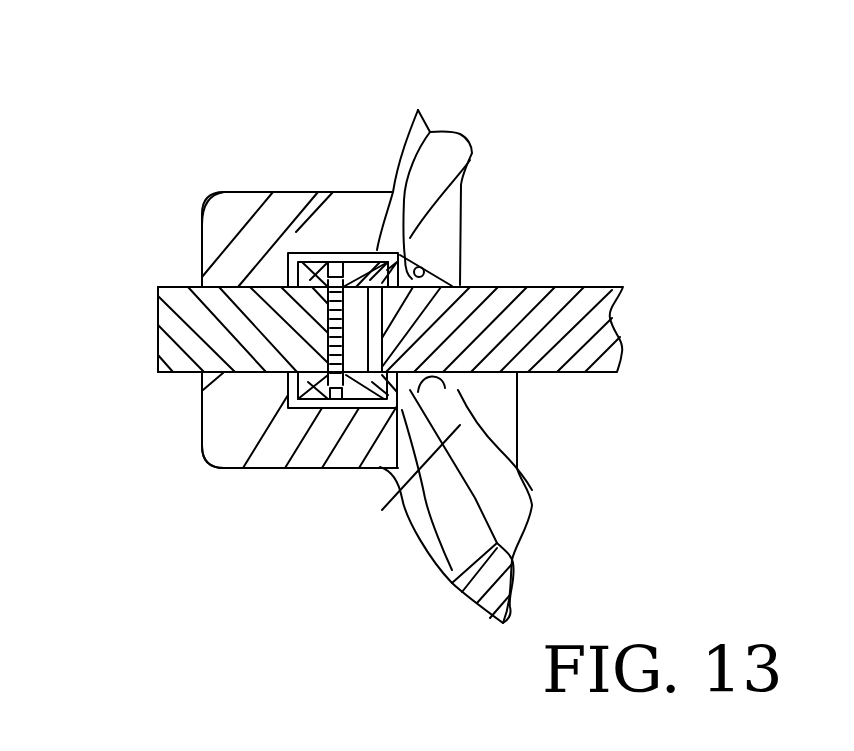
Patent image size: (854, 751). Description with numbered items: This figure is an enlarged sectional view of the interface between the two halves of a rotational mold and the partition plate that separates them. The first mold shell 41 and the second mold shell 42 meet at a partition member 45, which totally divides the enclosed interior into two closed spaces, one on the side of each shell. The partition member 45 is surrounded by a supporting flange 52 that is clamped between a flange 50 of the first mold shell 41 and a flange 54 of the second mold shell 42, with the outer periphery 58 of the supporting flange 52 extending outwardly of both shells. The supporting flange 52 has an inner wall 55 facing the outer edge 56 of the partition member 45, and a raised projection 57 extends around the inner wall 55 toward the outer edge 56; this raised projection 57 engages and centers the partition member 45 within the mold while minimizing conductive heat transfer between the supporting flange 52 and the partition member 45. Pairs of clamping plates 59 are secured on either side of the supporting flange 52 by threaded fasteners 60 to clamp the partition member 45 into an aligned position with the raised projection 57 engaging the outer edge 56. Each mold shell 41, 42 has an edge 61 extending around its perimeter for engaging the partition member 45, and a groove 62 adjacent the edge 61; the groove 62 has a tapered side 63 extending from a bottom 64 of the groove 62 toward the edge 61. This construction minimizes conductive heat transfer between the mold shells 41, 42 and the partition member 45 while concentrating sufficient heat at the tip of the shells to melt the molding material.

The first mold shell 41 is at (230, 232).
The second mold shell 42 is at (232, 400).
The partition member 45 is at (592, 312).
The flange 50 is at (240, 205).
The supporting flange 52 is at (185, 355).
The flange 54 is at (237, 435).
The inner wall 55 is at (346, 402).
The outer edge 56 is at (368, 259).
The raised projection 57 is at (290, 408).
The outer periphery 58 is at (172, 287).
The clamping plates 59 is at (380, 340).
The threaded fasteners 60 is at (300, 255).
The edge 61 is at (461, 268).
The groove 62 is at (472, 153).
The tapered side 63 is at (462, 225).
The bottom 64 is at (430, 132).